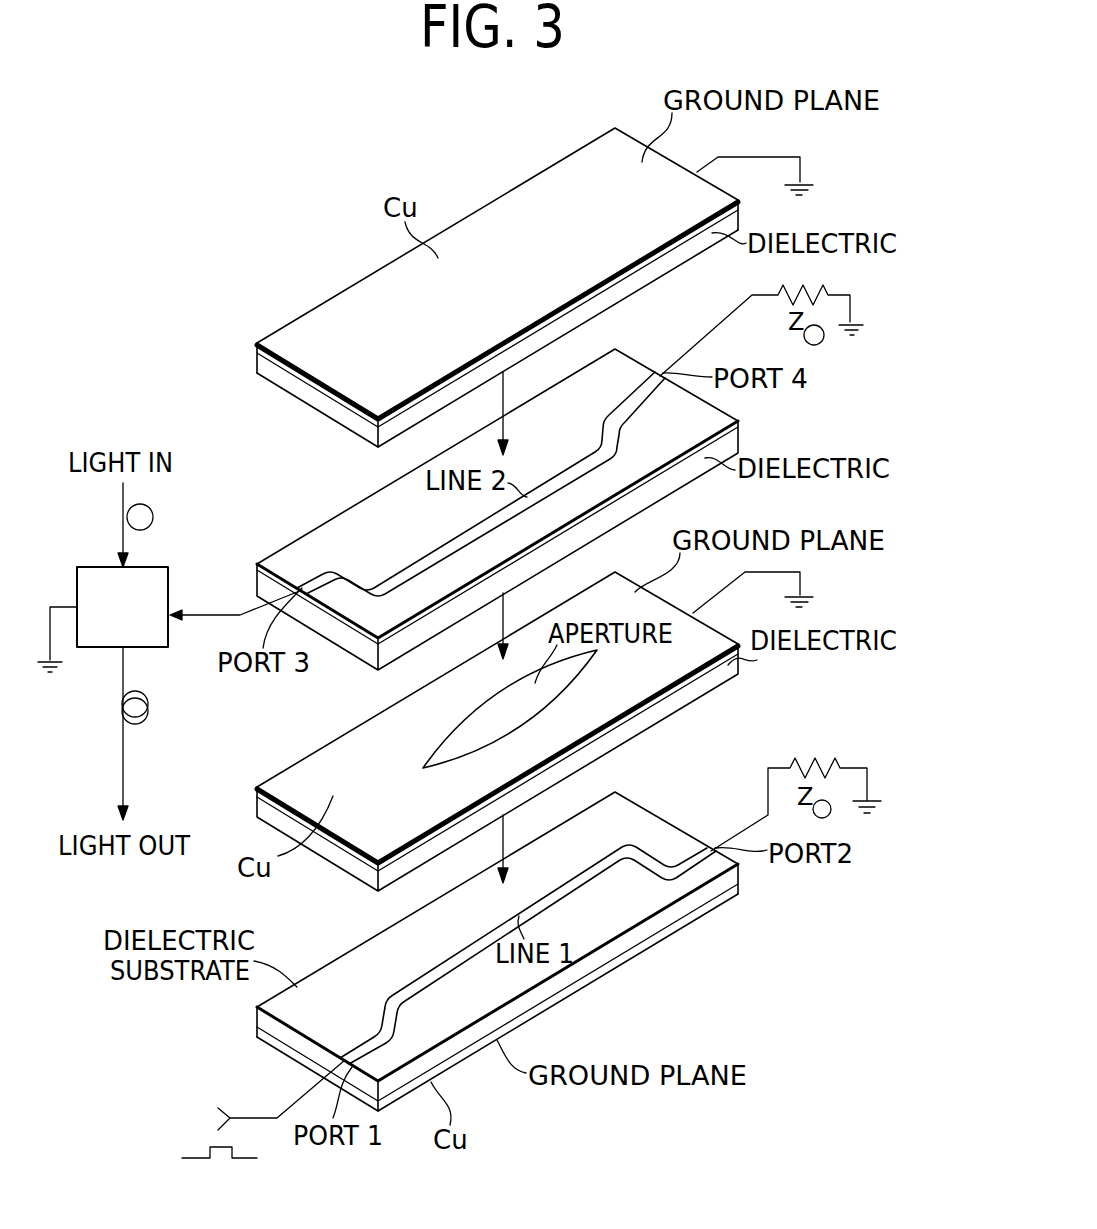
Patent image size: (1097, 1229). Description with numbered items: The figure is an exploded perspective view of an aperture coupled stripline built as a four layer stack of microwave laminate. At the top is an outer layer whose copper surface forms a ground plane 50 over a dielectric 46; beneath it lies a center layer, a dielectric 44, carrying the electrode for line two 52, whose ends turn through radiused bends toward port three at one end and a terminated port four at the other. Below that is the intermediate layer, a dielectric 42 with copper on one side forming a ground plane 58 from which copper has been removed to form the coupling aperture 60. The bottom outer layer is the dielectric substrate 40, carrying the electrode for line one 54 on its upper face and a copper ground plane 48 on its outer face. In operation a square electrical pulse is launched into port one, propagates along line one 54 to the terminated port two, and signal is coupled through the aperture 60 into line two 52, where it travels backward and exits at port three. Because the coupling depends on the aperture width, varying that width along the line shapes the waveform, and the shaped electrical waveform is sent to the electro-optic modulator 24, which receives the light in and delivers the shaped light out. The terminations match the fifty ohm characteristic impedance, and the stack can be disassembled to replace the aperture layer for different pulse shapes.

The upper ground plane 50 is at (532, 172).
The upper dielectric layer 46 is at (668, 260).
The line 2 stripline conductor 52 is at (625, 437).
The second dielectric layer 44 is at (676, 481).
The third dielectric layer 42 is at (703, 685).
The middle ground plane with aperture 58 is at (320, 752).
The coupling aperture 60 is at (443, 743).
The electro-optic modulator 24 is at (170, 582).
The dielectric substrate 40 is at (258, 1030).
The line 1 stripline conductor 54 is at (378, 992).
The lower ground plane 48 is at (647, 949).